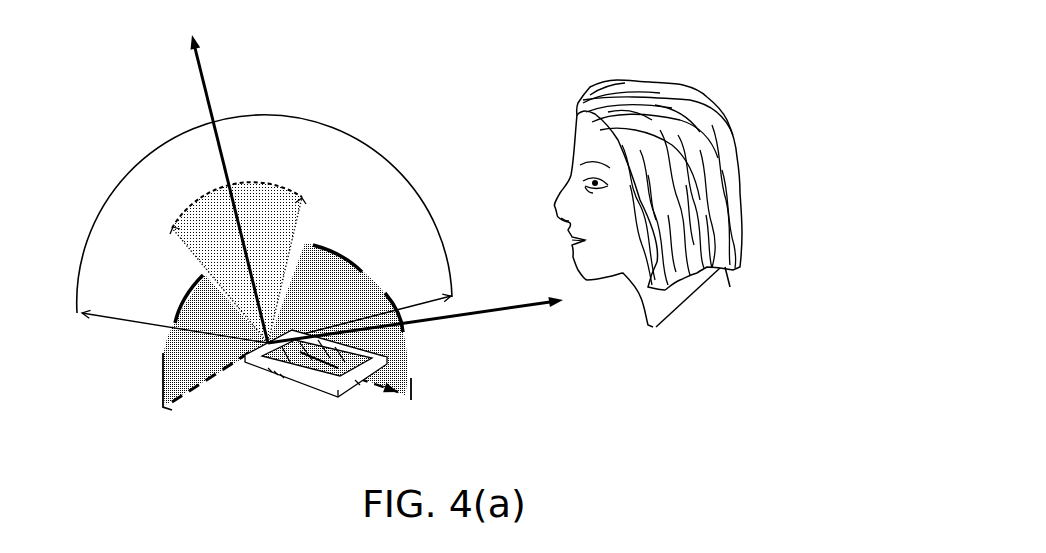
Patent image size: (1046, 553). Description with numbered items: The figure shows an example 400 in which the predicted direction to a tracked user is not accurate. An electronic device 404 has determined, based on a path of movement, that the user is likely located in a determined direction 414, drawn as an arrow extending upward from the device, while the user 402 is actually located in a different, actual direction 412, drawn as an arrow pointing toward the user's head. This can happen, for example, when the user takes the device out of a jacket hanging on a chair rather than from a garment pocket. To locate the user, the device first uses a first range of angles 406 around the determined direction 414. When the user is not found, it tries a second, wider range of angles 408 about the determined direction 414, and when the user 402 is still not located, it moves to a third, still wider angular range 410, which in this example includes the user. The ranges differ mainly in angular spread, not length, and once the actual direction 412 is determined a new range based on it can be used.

The example 400 is at (802, 80).
The user 402 is at (553, 128).
The electronic device 404 is at (297, 390).
The first range of angles 406 is at (265, 195).
The second range of angles 408 is at (108, 218).
The third angular range 410 is at (195, 372).
The actual direction 412 is at (462, 312).
The determined direction 414 is at (203, 82).